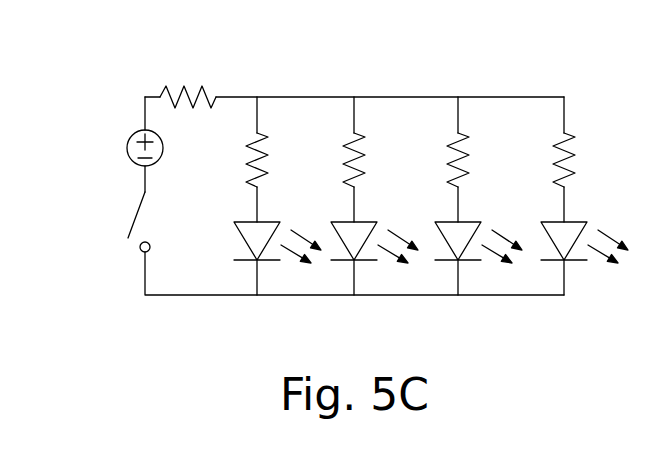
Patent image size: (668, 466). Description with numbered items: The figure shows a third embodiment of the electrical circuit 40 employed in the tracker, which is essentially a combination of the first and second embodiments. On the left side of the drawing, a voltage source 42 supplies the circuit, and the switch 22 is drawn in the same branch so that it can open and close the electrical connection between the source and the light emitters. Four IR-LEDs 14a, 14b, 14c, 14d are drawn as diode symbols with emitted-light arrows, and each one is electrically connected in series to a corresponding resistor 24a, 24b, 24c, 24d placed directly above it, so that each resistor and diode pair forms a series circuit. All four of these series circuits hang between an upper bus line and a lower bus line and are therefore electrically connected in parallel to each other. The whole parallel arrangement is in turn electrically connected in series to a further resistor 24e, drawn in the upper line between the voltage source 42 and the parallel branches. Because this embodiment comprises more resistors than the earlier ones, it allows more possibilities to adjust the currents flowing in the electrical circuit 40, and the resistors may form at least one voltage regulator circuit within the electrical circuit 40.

The electrical circuit 40 is at (182, 326).
The voltage source 42 is at (132, 134).
The switch 22 is at (135, 220).
The further resistor 24e is at (183, 83).
The resistor 24a is at (286, 101).
The resistor 24b is at (382, 101).
The resistor 24c is at (486, 101).
The resistor 24d is at (593, 101).
The IR-LED 14a is at (281, 295).
The IR-LED 14b is at (378, 295).
The IR-LED 14c is at (481, 295).
The IR-LED 14d is at (590, 295).